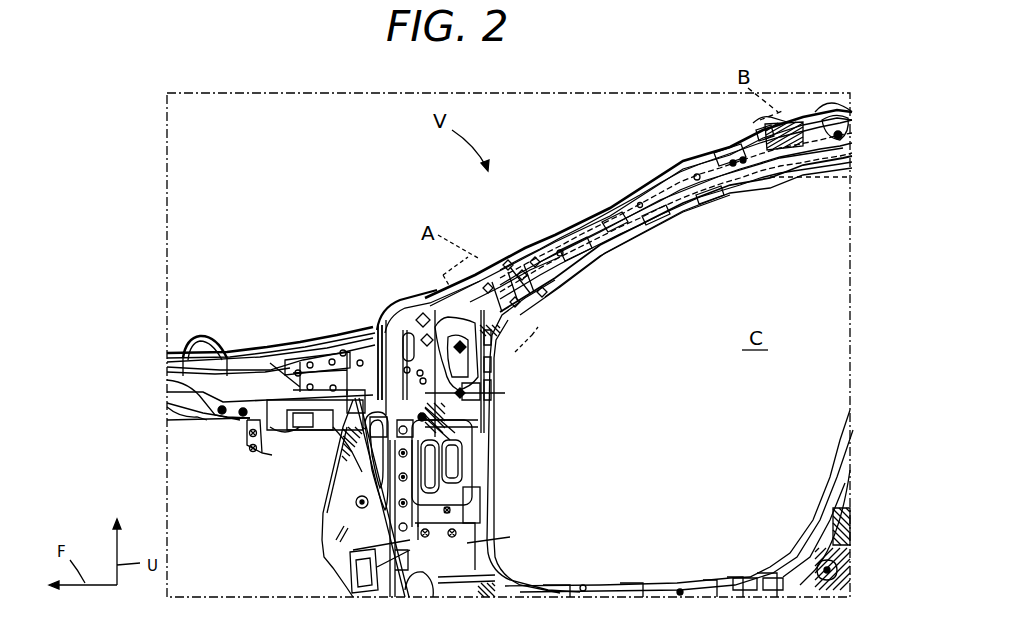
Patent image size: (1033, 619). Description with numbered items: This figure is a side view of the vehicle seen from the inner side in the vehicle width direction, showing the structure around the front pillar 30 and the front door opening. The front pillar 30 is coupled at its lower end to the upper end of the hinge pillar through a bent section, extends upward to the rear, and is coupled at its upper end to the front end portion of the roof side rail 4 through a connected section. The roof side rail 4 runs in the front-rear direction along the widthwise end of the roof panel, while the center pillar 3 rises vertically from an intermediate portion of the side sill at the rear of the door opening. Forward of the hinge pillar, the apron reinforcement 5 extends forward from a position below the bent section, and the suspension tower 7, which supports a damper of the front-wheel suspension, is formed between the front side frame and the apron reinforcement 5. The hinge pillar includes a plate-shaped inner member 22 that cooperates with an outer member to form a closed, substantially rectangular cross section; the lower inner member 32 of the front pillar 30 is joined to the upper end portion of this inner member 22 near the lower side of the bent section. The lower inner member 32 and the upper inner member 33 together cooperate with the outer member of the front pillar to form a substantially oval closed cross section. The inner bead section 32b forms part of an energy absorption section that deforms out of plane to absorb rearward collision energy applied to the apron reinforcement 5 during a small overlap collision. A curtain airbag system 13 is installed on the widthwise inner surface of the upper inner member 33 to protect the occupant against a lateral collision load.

The center pillar 3 is at (833, 492).
The roof side rail 4 is at (842, 108).
The apron reinforcement 5 is at (258, 356).
The suspension tower 7 is at (183, 350).
The curtain airbag system 13 is at (583, 210).
The inner member 22 is at (470, 541).
The front pillar 30 is at (690, 162).
The lower inner member 32 is at (482, 396).
The inner bead section 32b is at (489, 313).
The upper inner member 33 is at (530, 256).